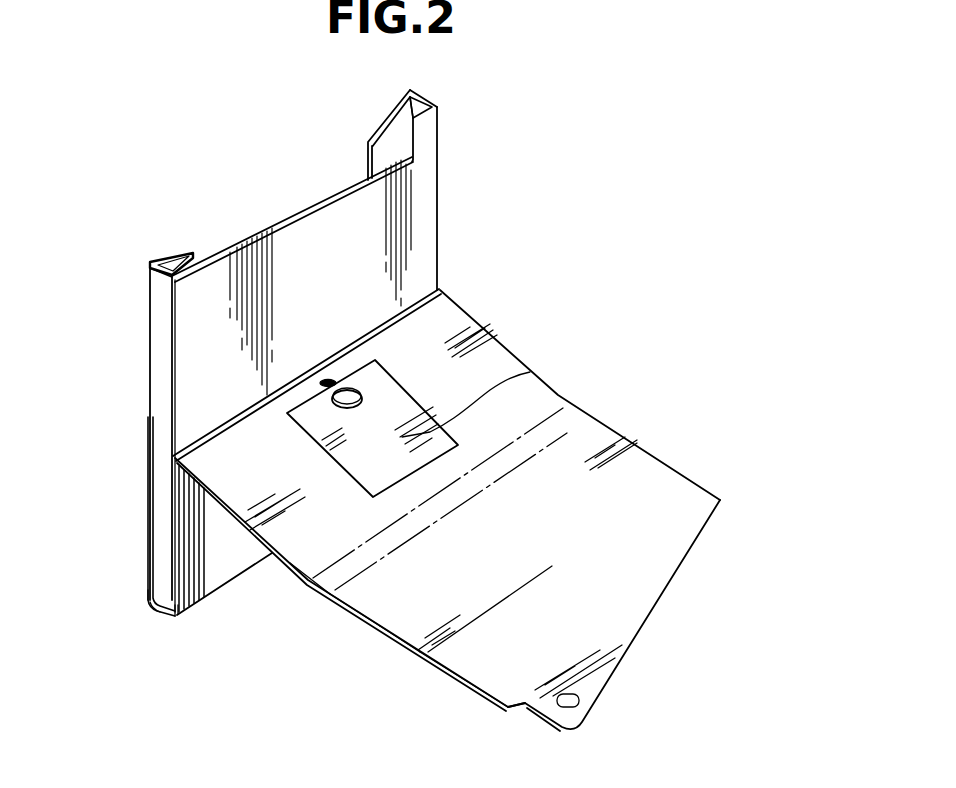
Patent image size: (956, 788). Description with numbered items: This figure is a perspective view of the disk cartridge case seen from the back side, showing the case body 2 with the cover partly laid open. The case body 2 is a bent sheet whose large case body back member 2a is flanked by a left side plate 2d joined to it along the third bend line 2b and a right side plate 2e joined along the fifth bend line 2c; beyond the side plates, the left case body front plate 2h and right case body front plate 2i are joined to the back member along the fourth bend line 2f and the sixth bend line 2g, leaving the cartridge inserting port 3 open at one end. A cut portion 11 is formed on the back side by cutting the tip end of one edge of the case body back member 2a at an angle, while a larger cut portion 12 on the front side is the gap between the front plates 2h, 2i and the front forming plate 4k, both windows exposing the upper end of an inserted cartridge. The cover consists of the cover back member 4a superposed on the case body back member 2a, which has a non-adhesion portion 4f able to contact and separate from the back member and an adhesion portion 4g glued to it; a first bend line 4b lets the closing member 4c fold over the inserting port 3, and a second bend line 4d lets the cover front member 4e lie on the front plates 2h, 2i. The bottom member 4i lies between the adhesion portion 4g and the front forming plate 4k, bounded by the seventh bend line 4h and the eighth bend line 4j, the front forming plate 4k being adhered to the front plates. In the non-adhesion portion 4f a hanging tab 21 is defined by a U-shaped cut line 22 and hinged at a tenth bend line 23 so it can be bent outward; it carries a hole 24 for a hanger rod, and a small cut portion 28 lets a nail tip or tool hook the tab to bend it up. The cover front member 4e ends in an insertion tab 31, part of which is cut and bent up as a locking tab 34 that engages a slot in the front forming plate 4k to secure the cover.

The case body 2 is at (127, 188).
The case body back member 2a is at (273, 240).
The third bend line 2b is at (440, 161).
The fifth bend line 2c is at (172, 392).
The left side plate 2d is at (430, 104).
The right side plate 2e is at (162, 352).
The fourth bend line 2f is at (412, 89).
The sixth bend line 2g is at (149, 297).
The left case body front plate 2h is at (408, 100).
The right case body front plate 2i is at (185, 254).
The cartridge inserting port 3 is at (167, 260).
The cut portion 11 is at (410, 136).
The cut portion 12 is at (366, 158).
The hanging tab 21 is at (407, 410).
The cut line 22 is at (530, 372).
The tenth bend line 23 is at (560, 396).
The hole 24 is at (362, 395).
The cut portion 28 is at (332, 380).
The insertion tab 31 is at (545, 706).
The locking tab 34 is at (578, 700).
The cover back member 4a is at (288, 709).
The first bend line 4b is at (328, 573).
The closing member 4c is at (360, 572).
The second bend line 4d is at (392, 575).
The cover front member 4e is at (463, 660).
The non-adhesion portion 4f is at (250, 530).
The adhesion portion 4g is at (211, 583).
The seventh bend line 4h is at (173, 606).
The bottom member 4i is at (168, 607).
The eighth bend line 4j is at (153, 600).
The front forming plate 4k is at (148, 527).